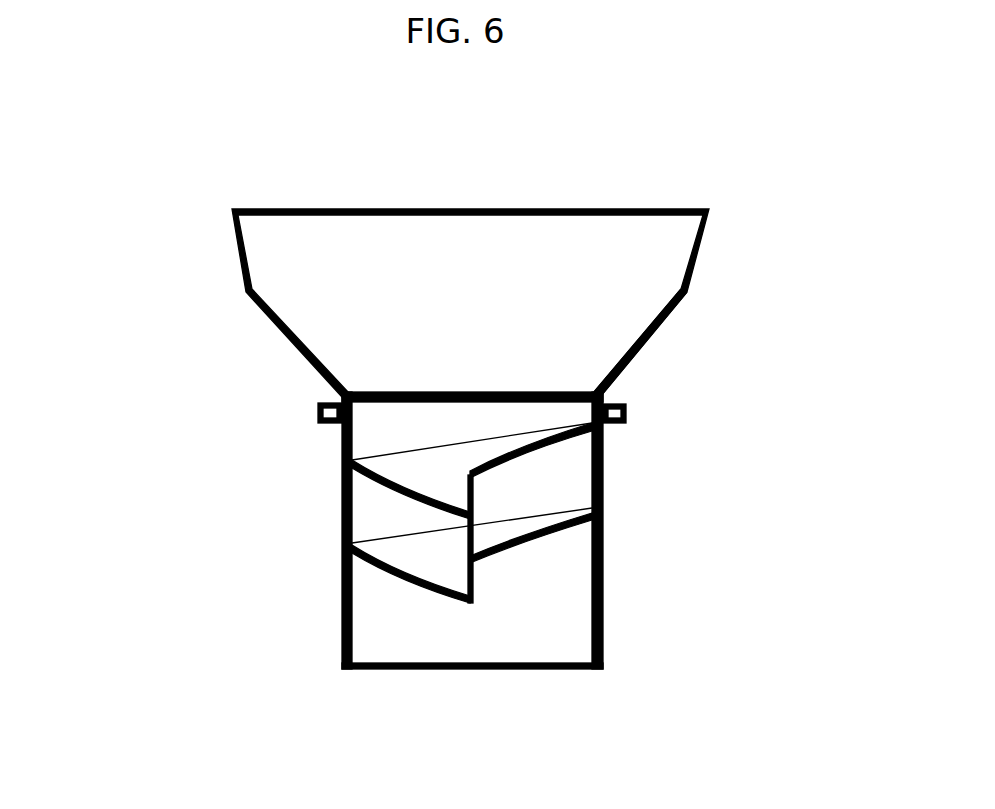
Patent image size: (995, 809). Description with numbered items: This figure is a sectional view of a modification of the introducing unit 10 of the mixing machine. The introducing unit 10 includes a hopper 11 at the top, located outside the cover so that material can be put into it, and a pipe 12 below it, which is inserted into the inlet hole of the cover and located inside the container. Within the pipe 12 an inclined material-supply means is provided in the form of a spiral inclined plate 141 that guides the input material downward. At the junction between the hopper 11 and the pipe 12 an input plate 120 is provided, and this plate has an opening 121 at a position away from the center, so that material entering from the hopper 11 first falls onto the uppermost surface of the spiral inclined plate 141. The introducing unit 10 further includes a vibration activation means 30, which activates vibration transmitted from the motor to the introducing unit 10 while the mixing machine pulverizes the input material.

The introducing unit 10 is at (229, 211).
The hopper 11 is at (687, 306).
The pipe 12 is at (605, 523).
The input plate 120 is at (442, 392).
The opening 121 is at (538, 392).
The vibration activation means 30 is at (628, 410).
The spiral inclined plate 141 is at (447, 580).